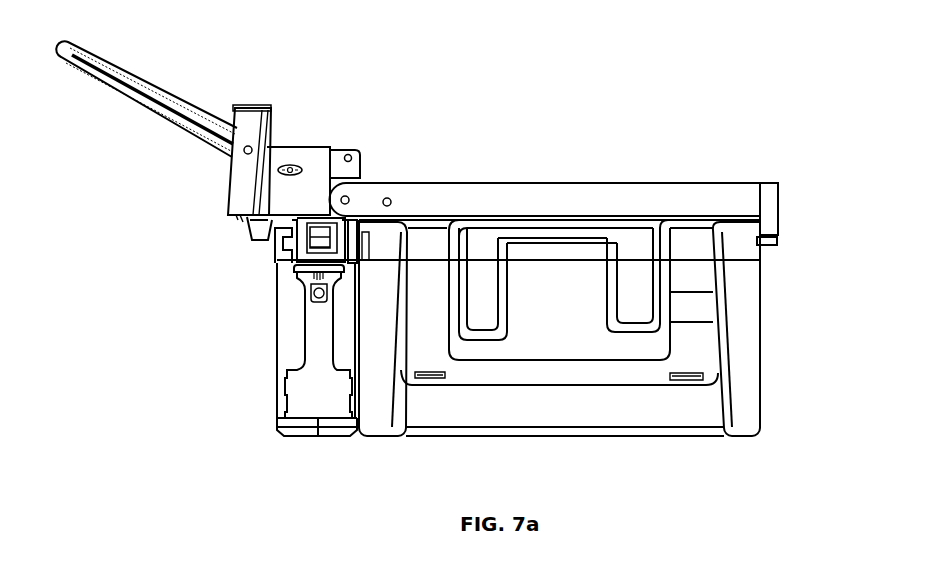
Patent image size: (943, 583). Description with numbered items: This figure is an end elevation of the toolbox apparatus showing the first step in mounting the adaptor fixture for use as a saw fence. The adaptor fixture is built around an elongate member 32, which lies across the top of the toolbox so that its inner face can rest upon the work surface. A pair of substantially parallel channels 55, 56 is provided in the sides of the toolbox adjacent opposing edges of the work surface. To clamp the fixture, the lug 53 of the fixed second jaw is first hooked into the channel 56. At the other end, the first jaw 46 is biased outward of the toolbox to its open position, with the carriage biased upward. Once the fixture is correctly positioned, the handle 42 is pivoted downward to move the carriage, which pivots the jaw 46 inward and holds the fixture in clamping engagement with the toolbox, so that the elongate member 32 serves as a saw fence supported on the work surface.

The handle 42 is at (143, 78).
The elongate member 32 is at (592, 195).
The first jaw 46 is at (253, 242).
The channel 55 is at (273, 245).
The lug 53 is at (762, 244).
The channel 56 is at (760, 253).